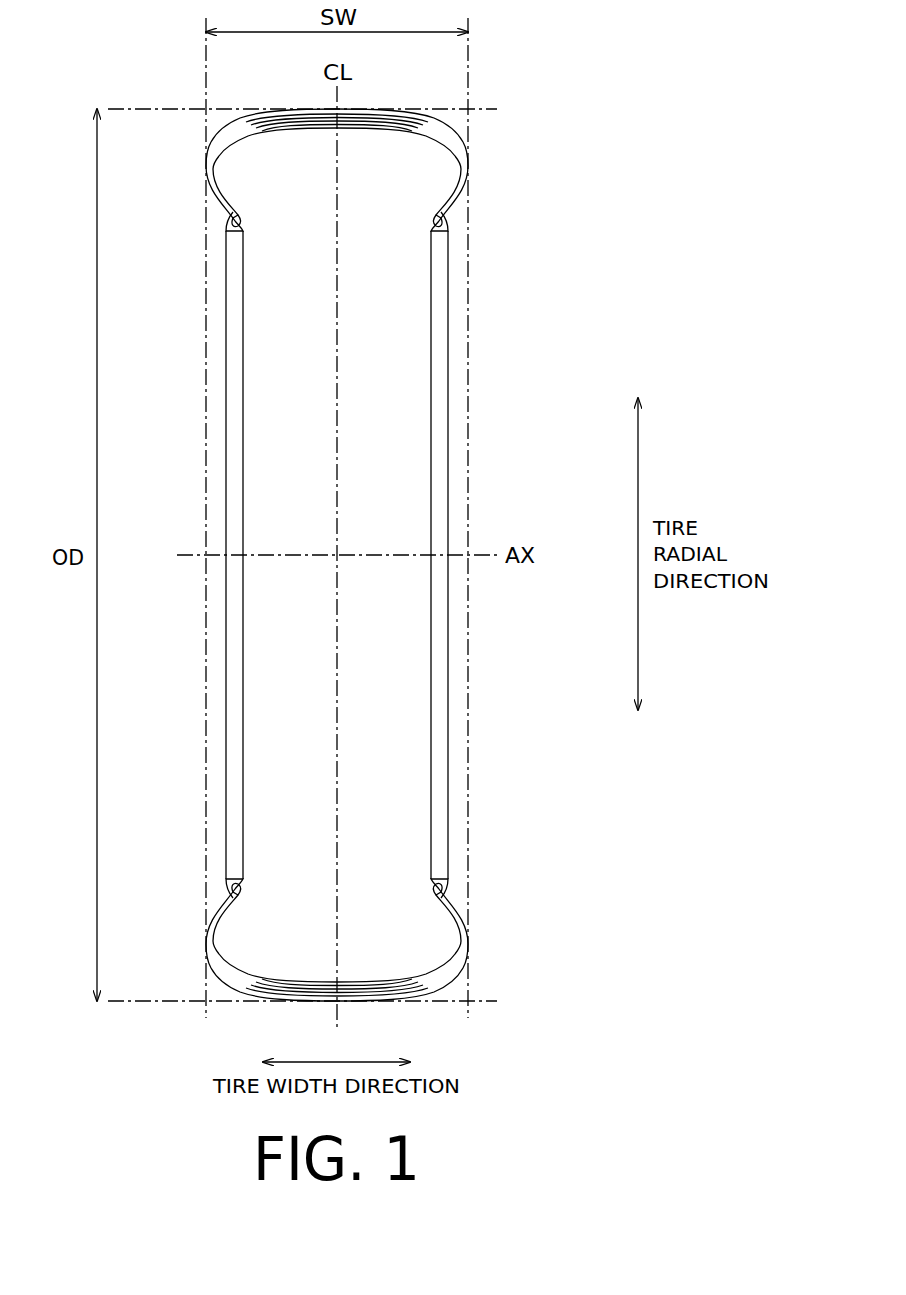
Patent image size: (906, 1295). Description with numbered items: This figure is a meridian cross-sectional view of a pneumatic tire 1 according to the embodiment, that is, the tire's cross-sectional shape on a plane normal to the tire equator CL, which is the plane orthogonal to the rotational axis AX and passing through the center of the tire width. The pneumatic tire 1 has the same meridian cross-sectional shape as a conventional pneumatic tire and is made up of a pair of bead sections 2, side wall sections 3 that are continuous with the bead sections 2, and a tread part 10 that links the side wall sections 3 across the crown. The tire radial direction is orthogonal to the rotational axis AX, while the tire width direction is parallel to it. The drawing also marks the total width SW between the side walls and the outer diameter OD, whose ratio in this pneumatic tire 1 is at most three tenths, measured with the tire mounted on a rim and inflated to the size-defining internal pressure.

The pneumatic tire 1 is at (571, 128).
The bead section 2 is at (225, 212).
The side wall section 3 is at (209, 169).
The tread part 10 is at (368, 108).